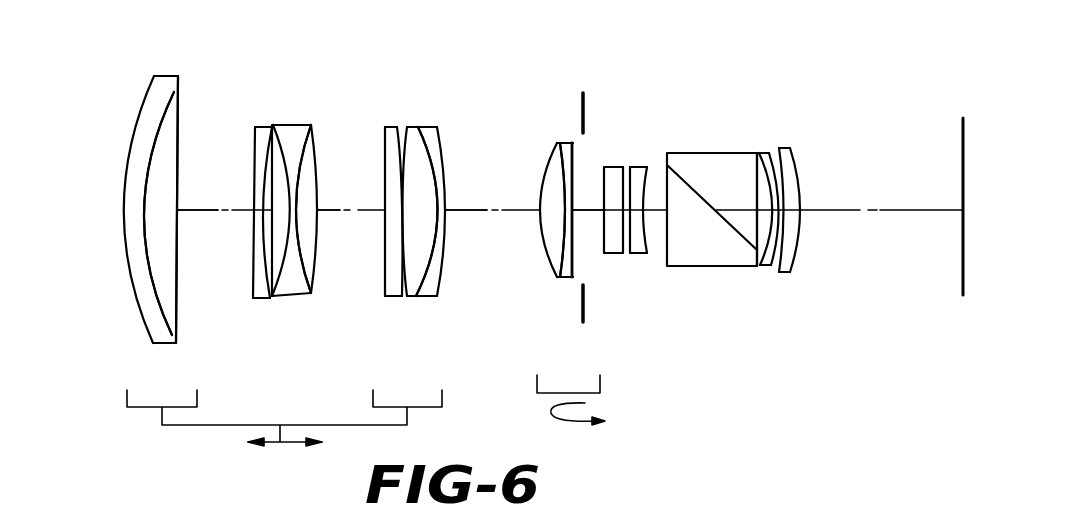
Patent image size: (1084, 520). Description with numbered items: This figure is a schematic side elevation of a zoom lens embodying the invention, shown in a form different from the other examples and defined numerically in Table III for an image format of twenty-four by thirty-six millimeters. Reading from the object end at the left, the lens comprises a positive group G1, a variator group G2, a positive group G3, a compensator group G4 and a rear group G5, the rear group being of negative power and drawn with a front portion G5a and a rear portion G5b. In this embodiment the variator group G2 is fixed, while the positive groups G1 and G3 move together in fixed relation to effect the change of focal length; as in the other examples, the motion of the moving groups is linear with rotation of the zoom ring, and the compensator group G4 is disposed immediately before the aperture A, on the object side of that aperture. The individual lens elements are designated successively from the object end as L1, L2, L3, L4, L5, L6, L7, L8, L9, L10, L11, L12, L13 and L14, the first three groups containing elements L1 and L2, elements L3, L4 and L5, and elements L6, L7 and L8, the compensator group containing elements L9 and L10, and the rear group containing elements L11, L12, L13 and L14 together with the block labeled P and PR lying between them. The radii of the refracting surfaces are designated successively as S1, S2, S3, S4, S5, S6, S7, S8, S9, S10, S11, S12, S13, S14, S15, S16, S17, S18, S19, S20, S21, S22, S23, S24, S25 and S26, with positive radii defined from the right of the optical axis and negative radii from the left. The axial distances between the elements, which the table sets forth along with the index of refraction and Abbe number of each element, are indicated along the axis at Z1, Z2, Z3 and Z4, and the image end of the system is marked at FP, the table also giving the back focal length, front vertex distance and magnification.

The positive group G1 is at (207, 47).
The variator group G2 is at (327, 47).
The positive group G3 is at (455, 47).
The compensator group G4 is at (600, 47).
The rear group G5 is at (812, 47).
The front sub-group of fifth lens group G5a is at (633, 179).
The rear sub-group of fifth lens group G5b is at (803, 179).
The lens element L1 is at (170, 225).
The lens element L2 is at (167, 278).
The lens element L3 is at (260, 215).
The lens element L4 is at (313, 209).
The lens element L5 is at (328, 209).
The lens element L6 is at (376, 209).
The lens element L7 is at (446, 198).
The lens element L8 is at (456, 210).
The lens element L9 is at (537, 213).
The lens element L10 is at (570, 214).
The lens element L11 is at (603, 200).
The lens element L12 is at (657, 199).
The lens element L13 is at (794, 195).
The lens element L14 is at (819, 196).
The lens surface S1 is at (146, 110).
The lens surface S2 is at (158, 125).
The lens surface S3 is at (180, 168).
The lens surface S4 is at (255, 143).
The lens surface S5 is at (264, 126).
The lens surface S6 is at (281, 134).
The lens surface S7 is at (312, 158).
The lens surface S8 is at (315, 186).
The lens surface S9 is at (385, 155).
The lens surface S10 is at (401, 160).
The lens surface S11 is at (404, 140).
The lens surface S12 is at (437, 142).
The lens surface S13 is at (443, 157).
The lens surface S14 is at (543, 188).
The lens surface S15 is at (554, 156).
The lens surface S16 is at (578, 140).
The lens surface S17 is at (604, 190).
The lens surface S18 is at (575, 150).
The lens surface S19 is at (631, 166).
The lens surface S20 is at (648, 166).
The lens surface S21 is at (656, 180).
The lens surface S22 is at (755, 177).
The lens surface S23 is at (752, 160).
The lens surface S24 is at (773, 150).
The lens surface S25 is at (786, 153).
The lens surface S26 is at (795, 173).
The aperture stop A is at (584, 92).
The prism P is at (695, 153).
The prism (beam splitter) PR is at (712, 227).
The focal plane FP is at (962, 140).
The axial spacing Z1 is at (201, 200).
The axial spacing Z2 is at (337, 227).
The axial spacing Z3 is at (474, 197).
The axial spacing Z4 is at (588, 228).